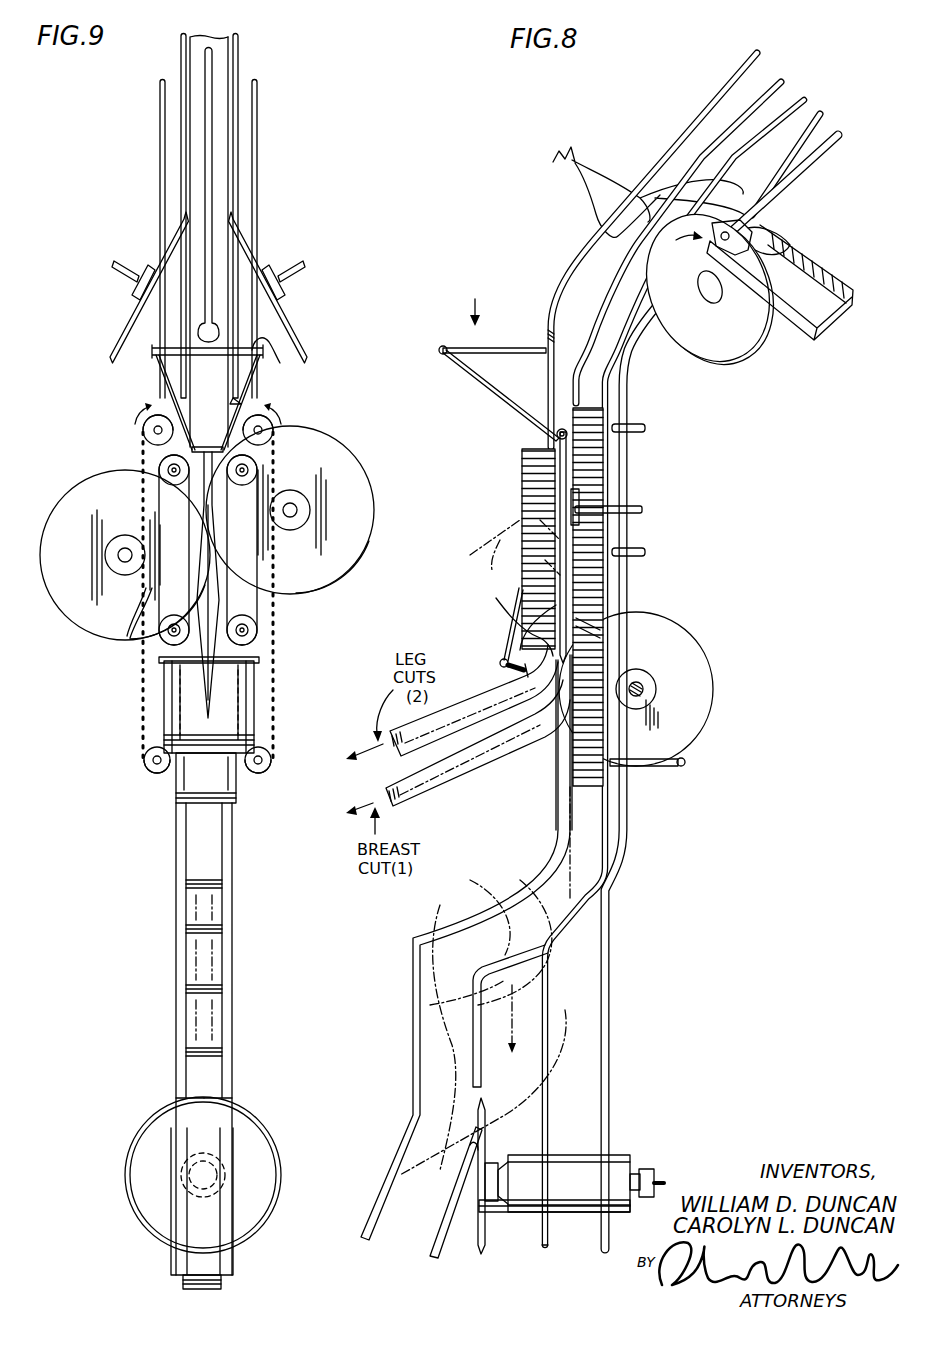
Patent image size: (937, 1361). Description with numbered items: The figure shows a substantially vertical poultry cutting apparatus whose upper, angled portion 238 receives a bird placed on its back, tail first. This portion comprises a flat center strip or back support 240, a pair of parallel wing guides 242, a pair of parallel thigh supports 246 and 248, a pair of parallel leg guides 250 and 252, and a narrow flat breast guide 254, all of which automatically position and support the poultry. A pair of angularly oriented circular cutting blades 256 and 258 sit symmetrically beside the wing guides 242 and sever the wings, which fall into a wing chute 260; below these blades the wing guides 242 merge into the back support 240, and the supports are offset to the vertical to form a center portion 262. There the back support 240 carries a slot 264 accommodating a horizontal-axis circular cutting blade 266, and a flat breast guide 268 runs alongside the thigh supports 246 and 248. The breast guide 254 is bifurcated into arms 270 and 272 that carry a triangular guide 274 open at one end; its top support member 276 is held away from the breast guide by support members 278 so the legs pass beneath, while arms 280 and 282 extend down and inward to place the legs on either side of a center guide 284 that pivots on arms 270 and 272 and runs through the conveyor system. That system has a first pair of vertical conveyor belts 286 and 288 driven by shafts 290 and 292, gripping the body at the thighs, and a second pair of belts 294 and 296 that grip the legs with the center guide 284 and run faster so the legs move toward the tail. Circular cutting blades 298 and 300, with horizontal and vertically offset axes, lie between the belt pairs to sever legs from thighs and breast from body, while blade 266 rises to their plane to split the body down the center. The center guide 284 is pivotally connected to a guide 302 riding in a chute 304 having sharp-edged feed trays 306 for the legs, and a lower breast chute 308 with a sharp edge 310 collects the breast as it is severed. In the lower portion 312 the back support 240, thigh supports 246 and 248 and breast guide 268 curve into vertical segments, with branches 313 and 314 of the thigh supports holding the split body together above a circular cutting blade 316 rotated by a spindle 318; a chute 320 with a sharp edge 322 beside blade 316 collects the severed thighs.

In FIG. 9, the upper angled portion 238 is at (274, 221).
In FIG. 8, the upper angled portion 238 is at (546, 262).
In FIG. 9, the flat center strip 240 is at (241, 39).
In FIG. 8, the flat center strip 240 is at (840, 136).
In FIG. 8, the wing guides 242 is at (818, 114).
In FIG. 9, the thigh support 246 is at (239, 58).
In FIG. 8, the thigh support 246 is at (804, 102).
In FIG. 9, the thigh support 248 is at (181, 51).
In FIG. 9, the leg guide 250 is at (258, 92).
In FIG. 8, the leg guide 250 is at (750, 100).
In FIG. 9, the leg guide 252 is at (160, 108).
In FIG. 9, the breast guide 254 is at (213, 145).
In FIG. 8, the breast guide 254 is at (758, 58).
In FIG. 9, the circular cutting blade 256 is at (298, 324).
In FIG. 8, the circular cutting blade 256 is at (747, 348).
In FIG. 9, the circular cutting blade 258 is at (120, 333).
In FIG. 8, the wing chute 260 is at (836, 318).
In FIG. 8, the center portion 262 is at (672, 587).
In FIG. 8, the slot 264 is at (599, 624).
In FIG. 8, the circular cutting blade 266 is at (712, 723).
In FIG. 9, the breast guide 268 is at (227, 836).
In FIG. 8, the breast guide 268 is at (559, 766).
In FIG. 9, the arm 270 is at (230, 405).
In FIG. 9, the arm 272 is at (192, 407).
In FIG. 8, the triangular guide 274 is at (471, 297).
In FIG. 9, the top support member 276 is at (278, 352).
In FIG. 8, the top support member 276 is at (443, 345).
In FIG. 8, the support members 278 is at (512, 347).
In FIG. 9, the arm 280 is at (262, 371).
In FIG. 8, the arm 280 is at (476, 396).
In FIG. 9, the arm 282 is at (156, 362).
In FIG. 9, the center guide 284 is at (209, 596).
In FIG. 8, the center guide 284 is at (517, 612).
In FIG. 9, the conveyor belt 286 is at (276, 624).
In FIG. 8, the conveyor belt 286 is at (601, 472).
In FIG. 9, the conveyor belt 288 is at (141, 457).
In FIG. 8, the shaft 290 is at (641, 424).
In FIG. 8, the shaft 292 is at (673, 765).
In FIG. 9, the conveyor belt 294 is at (261, 653).
In FIG. 8, the conveyor belt 294 is at (521, 477).
In FIG. 9, the conveyor belt 296 is at (143, 619).
In FIG. 9, the circular cutting blade 298 is at (370, 531).
In FIG. 8, the circular cutting blade 298 is at (560, 428).
In FIG. 9, the circular cutting blade 300 is at (88, 630).
In FIG. 8, the circular cutting blade 300 is at (524, 590).
In FIG. 8, the guide 302 is at (502, 666).
In FIG. 9, the chute 304 is at (255, 707).
In FIG. 8, the chute 304 is at (444, 722).
In FIG. 8, the feed trays 306 is at (555, 533).
In FIG. 9, the breast cut chute 308 is at (234, 792).
In FIG. 8, the breast cut chute 308 is at (420, 797).
In FIG. 8, the sharp edge 310 is at (552, 663).
In FIG. 8, the lower portion 312 is at (628, 1020).
In FIG. 9, the branch 313 is at (232, 1098).
In FIG. 8, the branch 313 is at (546, 1138).
In FIG. 9, the branch 314 is at (176, 1098).
In FIG. 9, the circular cutting blade 316 is at (263, 1209).
In FIG. 8, the circular cutting blade 316 is at (483, 1257).
In FIG. 8, the spindle 318 is at (651, 1168).
In FIG. 9, the chute 320 is at (232, 1267).
In FIG. 8, the chute 320 is at (435, 1257).
In FIG. 9, the sharp edge 322 is at (224, 1144).
In FIG. 8, the sharp edge 322 is at (474, 1153).